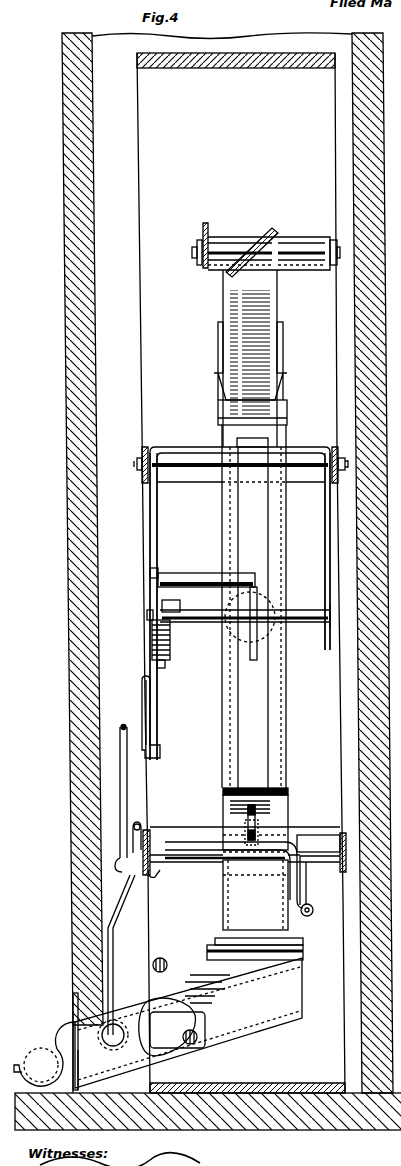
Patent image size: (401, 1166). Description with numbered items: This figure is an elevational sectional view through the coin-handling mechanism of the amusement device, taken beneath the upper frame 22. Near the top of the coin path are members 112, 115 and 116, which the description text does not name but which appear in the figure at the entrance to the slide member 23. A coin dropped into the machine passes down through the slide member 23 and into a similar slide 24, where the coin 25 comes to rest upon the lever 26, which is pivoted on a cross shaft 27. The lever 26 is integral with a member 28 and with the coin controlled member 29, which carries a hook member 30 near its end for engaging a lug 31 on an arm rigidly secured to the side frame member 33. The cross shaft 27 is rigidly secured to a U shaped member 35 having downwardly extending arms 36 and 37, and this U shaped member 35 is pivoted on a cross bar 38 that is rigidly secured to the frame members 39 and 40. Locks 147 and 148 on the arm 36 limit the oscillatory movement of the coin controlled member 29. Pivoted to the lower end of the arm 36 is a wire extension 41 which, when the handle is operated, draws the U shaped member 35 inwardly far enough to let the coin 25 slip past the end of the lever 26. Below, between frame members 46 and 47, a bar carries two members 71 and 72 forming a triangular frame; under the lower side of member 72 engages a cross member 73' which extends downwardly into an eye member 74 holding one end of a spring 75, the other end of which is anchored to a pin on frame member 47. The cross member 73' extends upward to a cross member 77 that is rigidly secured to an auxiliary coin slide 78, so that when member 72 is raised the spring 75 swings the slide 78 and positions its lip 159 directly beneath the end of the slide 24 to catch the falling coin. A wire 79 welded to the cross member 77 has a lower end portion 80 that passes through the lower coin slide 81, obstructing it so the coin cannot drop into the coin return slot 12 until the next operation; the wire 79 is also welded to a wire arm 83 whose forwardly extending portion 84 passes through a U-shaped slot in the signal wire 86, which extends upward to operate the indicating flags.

The coin return slot 12 is at (62, 1032).
The frame 22 is at (238, 66).
The slide member 23 is at (265, 292).
The slide 24 is at (222, 528).
The coin 25 is at (265, 590).
The lever 26 is at (257, 650).
The cross shaft 27 is at (205, 623).
The member 28 is at (190, 573).
The coin controlled member 29 is at (180, 605).
The hook member 30 is at (157, 665).
The lug 31 is at (147, 613).
The side frame member 33 is at (188, 1023).
The U shaped member 35 is at (185, 447).
The arm 36 is at (150, 510).
The arm 37 is at (330, 513).
The cross bar 38 is at (192, 468).
The frame member 39 is at (137, 460).
The frame member 40 is at (340, 455).
The wire extension 41 is at (150, 700).
The frame member 46 is at (153, 873).
The frame member 47 is at (343, 840).
The member 71 is at (255, 815).
The member 72 is at (258, 832).
The cross member 73' is at (234, 863).
The eye member 74 is at (298, 948).
The spring 75 is at (313, 910).
The cross member 77 is at (318, 862).
The auxiliary coin slide 78 is at (255, 895).
The wire 79 is at (112, 925).
The lower end portion 80 is at (110, 1045).
The coin slide 81 is at (118, 1062).
The wire arm 83 is at (133, 838).
The forwardly extending portion 84 is at (125, 862).
The signal wire 86 is at (123, 727).
The plate 112 is at (203, 230).
The roller 115 is at (300, 250).
The roller 116 is at (232, 240).
The lock 147 is at (150, 573).
The lock 148 is at (165, 660).
The lip 159 is at (288, 790).